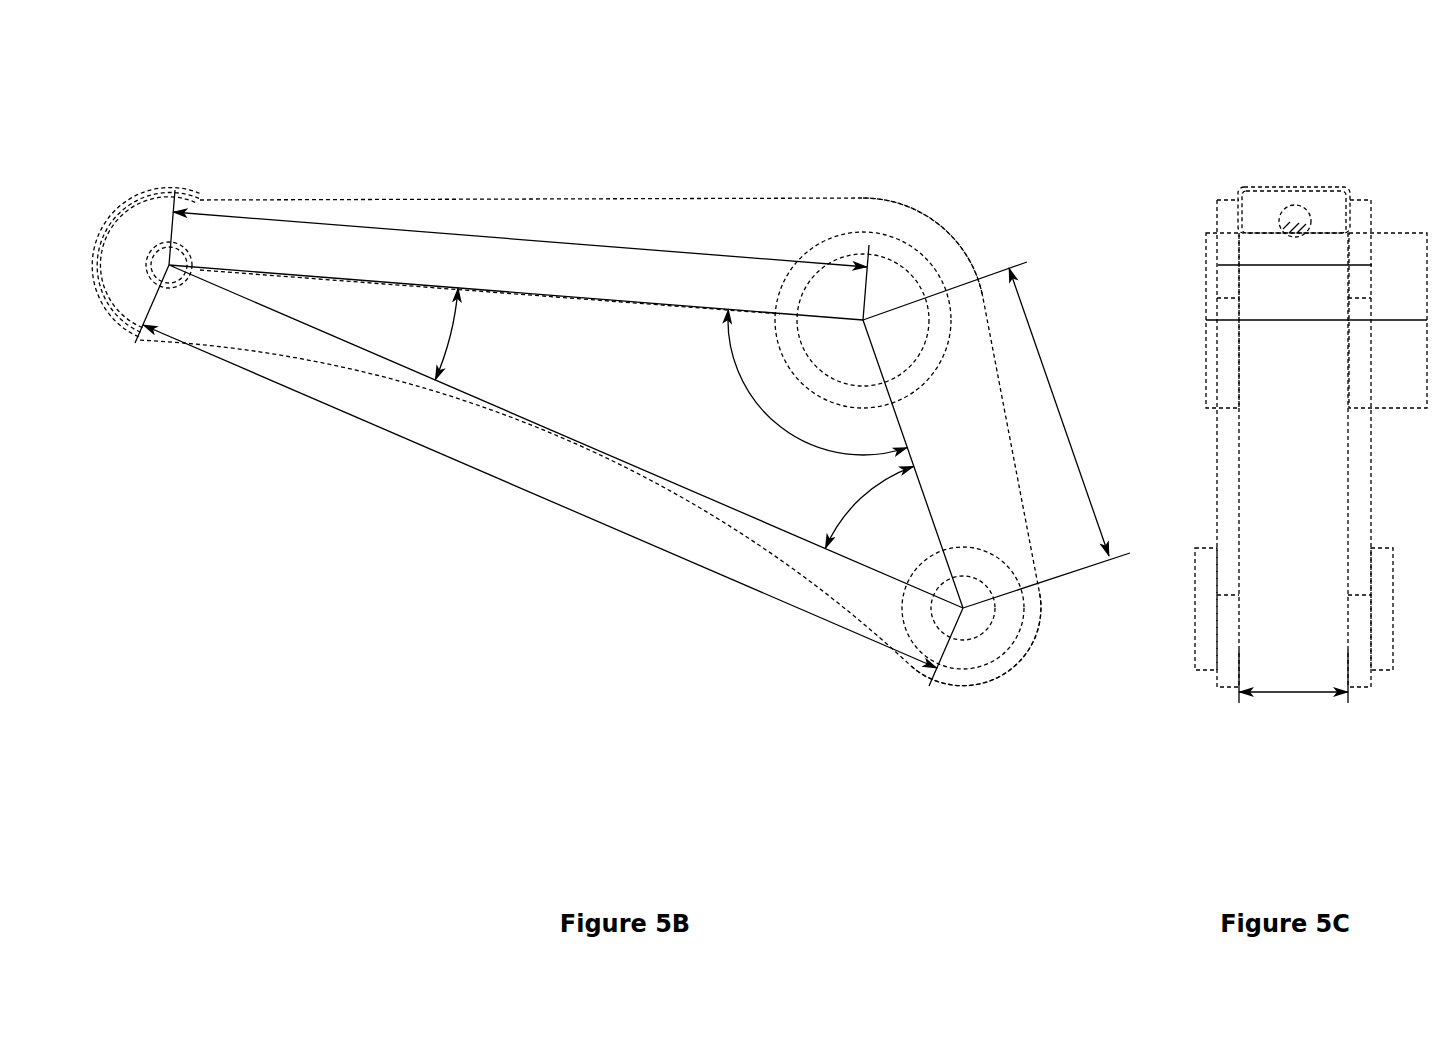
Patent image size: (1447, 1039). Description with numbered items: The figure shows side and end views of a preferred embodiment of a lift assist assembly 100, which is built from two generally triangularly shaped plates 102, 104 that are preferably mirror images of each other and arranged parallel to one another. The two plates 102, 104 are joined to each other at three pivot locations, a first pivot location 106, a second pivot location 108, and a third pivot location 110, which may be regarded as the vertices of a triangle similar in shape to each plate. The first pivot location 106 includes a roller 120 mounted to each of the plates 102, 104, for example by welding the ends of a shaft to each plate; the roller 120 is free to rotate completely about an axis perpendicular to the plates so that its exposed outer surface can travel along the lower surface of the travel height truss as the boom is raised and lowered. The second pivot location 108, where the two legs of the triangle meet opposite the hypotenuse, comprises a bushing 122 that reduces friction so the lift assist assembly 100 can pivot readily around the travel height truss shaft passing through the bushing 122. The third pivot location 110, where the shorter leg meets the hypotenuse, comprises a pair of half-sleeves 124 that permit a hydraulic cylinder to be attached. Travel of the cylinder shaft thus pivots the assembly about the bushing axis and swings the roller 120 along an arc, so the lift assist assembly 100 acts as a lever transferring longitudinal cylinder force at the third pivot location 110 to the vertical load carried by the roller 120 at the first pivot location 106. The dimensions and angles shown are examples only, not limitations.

In FIG. 5B, the lift assist assembly 100 is at (622, 168).
In FIG. 5C, the lift assist assembly 100 is at (1225, 722).
In FIG. 5C, the plate 102 is at (1225, 423).
In FIG. 5C, the plate 104 is at (1355, 503).
In FIG. 5B, the first pivot location 106 is at (223, 170).
In FIG. 5B, the second pivot location 108 is at (930, 178).
In FIG. 5B, the third pivot location 110 is at (873, 655).
In FIG. 5B, the roller 120 is at (148, 338).
In FIG. 5C, the roller 120 is at (1275, 205).
In FIG. 5B, the bushing 122 is at (925, 268).
In FIG. 5C, the bushing 122 is at (1208, 292).
In FIG. 5B, the half-sleeves 124 is at (1007, 633).
In FIG. 5C, the half-sleeves 124 is at (1383, 650).